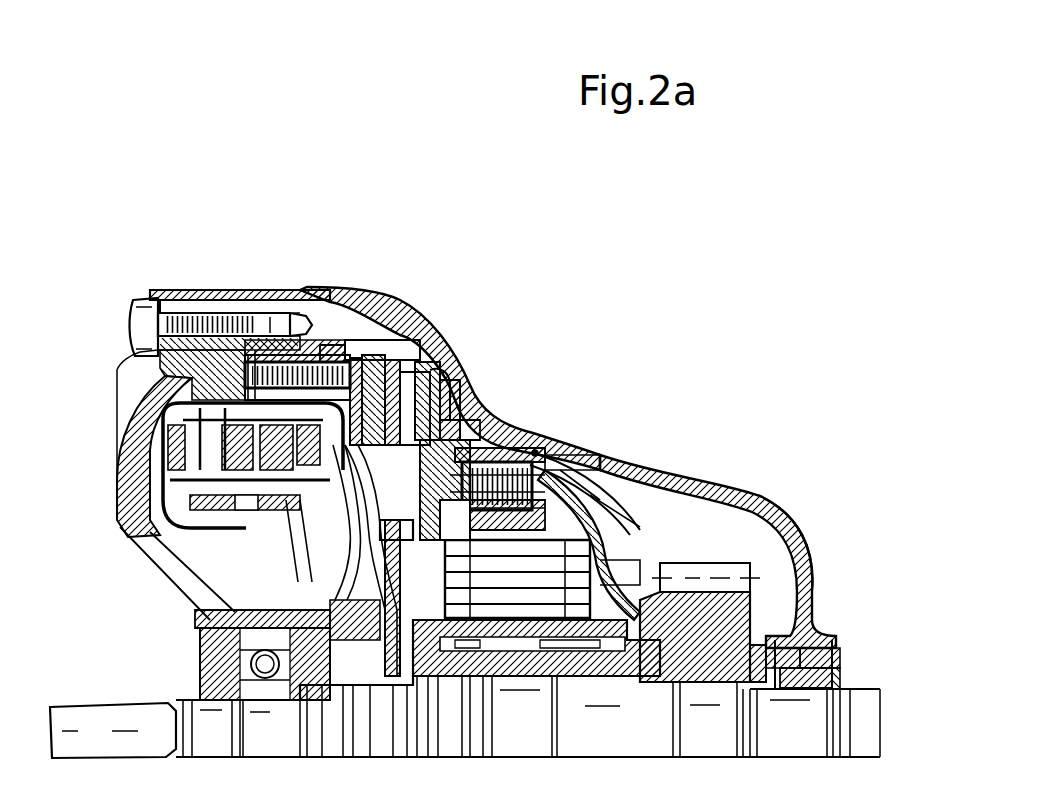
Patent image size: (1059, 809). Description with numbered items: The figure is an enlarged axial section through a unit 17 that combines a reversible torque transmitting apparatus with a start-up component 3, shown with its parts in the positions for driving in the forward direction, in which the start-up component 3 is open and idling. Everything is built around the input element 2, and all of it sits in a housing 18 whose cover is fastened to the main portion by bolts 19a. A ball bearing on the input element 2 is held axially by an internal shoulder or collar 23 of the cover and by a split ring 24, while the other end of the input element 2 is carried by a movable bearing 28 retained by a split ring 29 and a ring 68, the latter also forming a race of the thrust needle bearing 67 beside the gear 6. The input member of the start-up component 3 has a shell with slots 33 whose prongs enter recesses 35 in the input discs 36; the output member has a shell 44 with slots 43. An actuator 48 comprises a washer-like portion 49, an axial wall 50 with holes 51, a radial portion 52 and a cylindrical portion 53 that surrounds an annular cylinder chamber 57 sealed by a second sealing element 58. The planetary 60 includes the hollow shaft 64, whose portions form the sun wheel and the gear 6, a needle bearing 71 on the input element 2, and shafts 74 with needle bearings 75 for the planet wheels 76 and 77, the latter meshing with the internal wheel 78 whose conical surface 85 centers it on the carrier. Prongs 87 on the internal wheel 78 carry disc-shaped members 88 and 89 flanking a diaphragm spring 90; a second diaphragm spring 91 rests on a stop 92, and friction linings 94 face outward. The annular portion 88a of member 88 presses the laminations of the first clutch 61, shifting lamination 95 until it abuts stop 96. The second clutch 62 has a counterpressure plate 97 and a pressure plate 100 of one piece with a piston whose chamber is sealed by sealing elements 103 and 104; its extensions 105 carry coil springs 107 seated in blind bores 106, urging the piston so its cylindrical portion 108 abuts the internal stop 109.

The input element 2 is at (112, 746).
The start-up component 3 is at (122, 448).
The first gear of the gear train 6 is at (745, 570).
The unit 17 is at (570, 330).
The housing 18 is at (770, 504).
The bolts 19a is at (138, 340).
The internal shoulder or collar 23 is at (222, 645).
The split ring 24 is at (213, 620).
The movable bearing 28 is at (800, 662).
The split ring 29 is at (830, 683).
The axially parallel slots 33 is at (180, 482).
The recesses 35 is at (117, 372).
The input discs or laminations 36 is at (190, 290).
The axially parallel slots 43 is at (170, 298).
The cylindrical wall or shell 44 is at (232, 350).
The actuator 48 is at (257, 350).
The washer-like radially outer portion 49 is at (128, 430).
The axially extending portion or wall 50 is at (215, 300).
The radially extending bores or holes 51 is at (165, 513).
The radially inwardly extending portion 52 is at (290, 300).
The axially extending cylindrical portion 53 is at (300, 568).
The annular cylinder chamber 57 is at (300, 706).
The second sealing element 58 is at (318, 593).
The planetary transmission 60 is at (600, 510).
The first clutch 61 is at (540, 448).
The second clutch 62 is at (426, 358).
The hollow tubular member or shaft 64 is at (727, 617).
The needle bearing 67 is at (780, 660).
The ring 68 is at (808, 642).
The needle bearing 71 is at (528, 716).
The shafts 74 is at (600, 585).
The needle bearing 75 is at (517, 579).
The planet wheel 76 is at (596, 578).
The planet wheel 77 is at (580, 520).
The internal wheel 78 is at (650, 457).
The conical external centering surface 85 is at (590, 520).
The axially parallel prongs 87 is at (495, 560).
The disc-shaped member 88 is at (382, 330).
The pressure transmitting annular portion 88a is at (468, 420).
The disc-shaped member 89 is at (336, 345).
The diaphragm spring 90 is at (345, 345).
The second diaphragm spring 91 is at (433, 360).
The stop 92 is at (450, 357).
The friction linings 94 is at (322, 330).
The lamination 95 is at (535, 453).
The stop 96 is at (560, 520).
The counterpressure plate 97 is at (332, 360).
The pressure plate 100 is at (430, 360).
The sealing element 103 is at (383, 285).
The sealing element 104 is at (490, 446).
The axially parallel extensions 105 is at (345, 345).
The blind bore or hole 106 is at (330, 350).
The coil springs 107 is at (250, 390).
The cylindrical right-hand portion 108 is at (465, 360).
The internal stop 109 is at (505, 430).